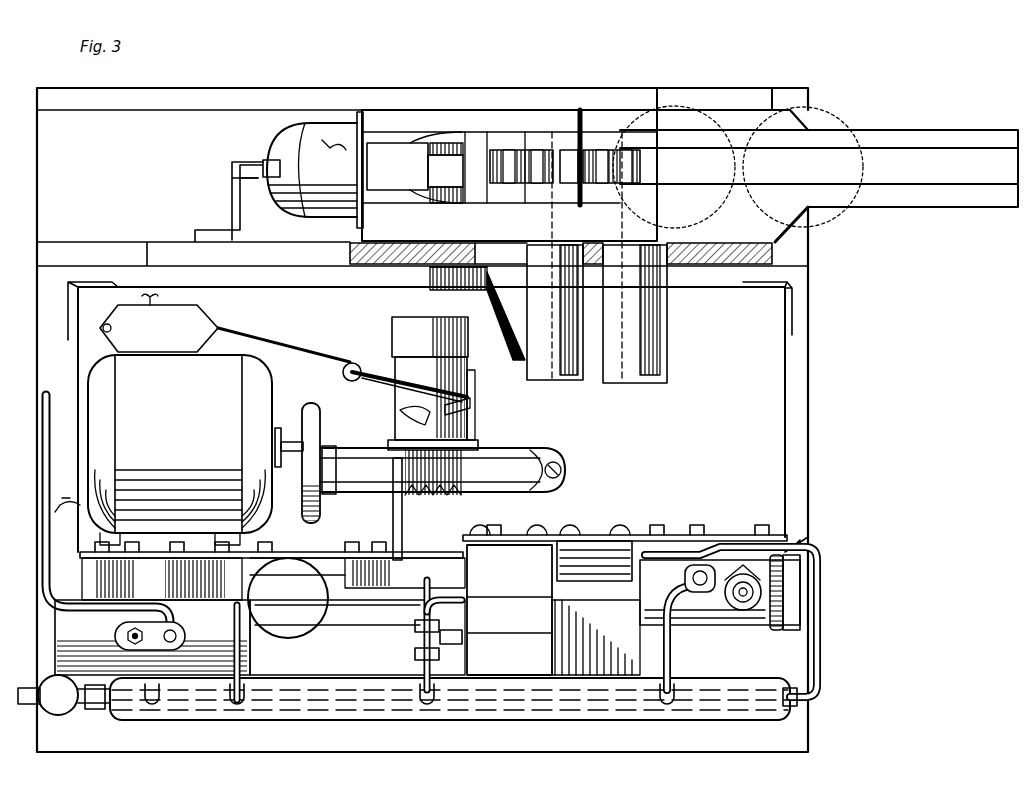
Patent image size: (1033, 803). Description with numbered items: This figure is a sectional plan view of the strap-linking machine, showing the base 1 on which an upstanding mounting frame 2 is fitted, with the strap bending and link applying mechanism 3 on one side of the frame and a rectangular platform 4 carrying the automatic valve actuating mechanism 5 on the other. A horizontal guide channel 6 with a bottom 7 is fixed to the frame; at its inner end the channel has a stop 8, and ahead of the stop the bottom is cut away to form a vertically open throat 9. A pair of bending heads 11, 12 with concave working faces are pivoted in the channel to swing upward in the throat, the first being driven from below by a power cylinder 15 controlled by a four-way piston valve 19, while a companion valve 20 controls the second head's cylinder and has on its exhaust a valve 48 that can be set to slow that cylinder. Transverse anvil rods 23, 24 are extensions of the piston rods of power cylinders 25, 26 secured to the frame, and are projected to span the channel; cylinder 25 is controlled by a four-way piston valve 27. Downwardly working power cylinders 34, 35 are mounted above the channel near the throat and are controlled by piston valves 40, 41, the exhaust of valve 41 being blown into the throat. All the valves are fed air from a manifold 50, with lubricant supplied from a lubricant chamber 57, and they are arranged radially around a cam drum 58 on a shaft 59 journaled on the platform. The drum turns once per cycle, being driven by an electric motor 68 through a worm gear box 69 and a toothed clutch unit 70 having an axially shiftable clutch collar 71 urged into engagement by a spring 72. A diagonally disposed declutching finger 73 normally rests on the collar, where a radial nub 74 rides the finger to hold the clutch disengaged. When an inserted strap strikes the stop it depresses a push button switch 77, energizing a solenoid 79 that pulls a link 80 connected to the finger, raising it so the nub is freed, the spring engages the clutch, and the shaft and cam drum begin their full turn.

The base 1 is at (805, 358).
The upstanding mounting frame 2 is at (722, 278).
The strap bending and link applying mechanism 3 is at (532, 138).
The rectangular platform 4 is at (762, 455).
The automatic valve actuating mechanism 5 is at (480, 548).
The horizontal guide channel 6 is at (884, 135).
The bottom 7 is at (913, 172).
The stop 8 is at (478, 142).
The throat 9 is at (569, 157).
The bending head 11 is at (498, 178).
The bending head 12 is at (597, 172).
The power cylinder 15 is at (320, 135).
The four-way piston valve 19 is at (90, 634).
The four-way piston valve 20 is at (706, 625).
The transverse anvil rod 23 is at (548, 218).
The transverse anvil rod 24 is at (630, 262).
The power cylinder 25 is at (560, 360).
The power cylinder 26 is at (632, 380).
The four-way piston valve 27 is at (508, 665).
The power cylinder 34 is at (830, 106).
The power cylinder 35 is at (700, 118).
The piston valve 40 is at (600, 545).
The piston valve 41 is at (296, 572).
The valve 48 is at (743, 614).
The manifold 50 is at (300, 712).
The lubricant chamber 57 is at (48, 710).
The cam drum 58 is at (385, 660).
The shaft 59 is at (430, 410).
The electric motor 68 is at (128, 400).
The worm gear box 69 is at (465, 440).
The clutch unit 70 is at (481, 412).
The clutch collar 71 is at (403, 396).
The spring 72 is at (416, 352).
The declutching finger 73 is at (466, 382).
The radial nub 74 is at (455, 368).
The push button switch 77 is at (490, 152).
The solenoid 79 is at (163, 340).
The link 80 is at (305, 336).